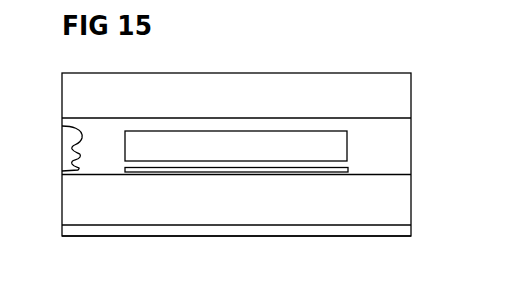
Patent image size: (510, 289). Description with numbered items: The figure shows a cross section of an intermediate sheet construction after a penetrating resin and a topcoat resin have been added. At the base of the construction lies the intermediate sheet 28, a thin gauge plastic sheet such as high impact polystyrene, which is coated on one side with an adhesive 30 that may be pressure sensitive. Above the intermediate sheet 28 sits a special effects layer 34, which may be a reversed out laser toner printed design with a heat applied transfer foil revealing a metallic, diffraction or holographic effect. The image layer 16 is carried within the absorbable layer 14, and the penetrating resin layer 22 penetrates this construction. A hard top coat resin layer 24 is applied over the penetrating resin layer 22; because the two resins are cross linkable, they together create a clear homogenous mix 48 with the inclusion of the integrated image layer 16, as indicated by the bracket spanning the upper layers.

The absorbable layer 14 is at (72, 153).
The image layer 16 is at (322, 147).
The penetrating resin layer 22 is at (180, 123).
The hard top coat resin layer 24 is at (263, 80).
The intermediate sheet 28 is at (97, 195).
The adhesive 30 is at (182, 225).
The special effects layer 34 is at (277, 176).
The homogenous mix 48 is at (417, 74).